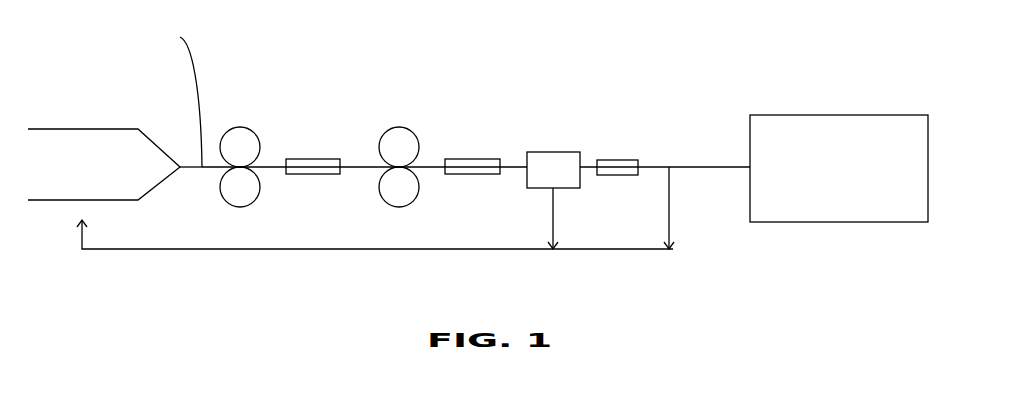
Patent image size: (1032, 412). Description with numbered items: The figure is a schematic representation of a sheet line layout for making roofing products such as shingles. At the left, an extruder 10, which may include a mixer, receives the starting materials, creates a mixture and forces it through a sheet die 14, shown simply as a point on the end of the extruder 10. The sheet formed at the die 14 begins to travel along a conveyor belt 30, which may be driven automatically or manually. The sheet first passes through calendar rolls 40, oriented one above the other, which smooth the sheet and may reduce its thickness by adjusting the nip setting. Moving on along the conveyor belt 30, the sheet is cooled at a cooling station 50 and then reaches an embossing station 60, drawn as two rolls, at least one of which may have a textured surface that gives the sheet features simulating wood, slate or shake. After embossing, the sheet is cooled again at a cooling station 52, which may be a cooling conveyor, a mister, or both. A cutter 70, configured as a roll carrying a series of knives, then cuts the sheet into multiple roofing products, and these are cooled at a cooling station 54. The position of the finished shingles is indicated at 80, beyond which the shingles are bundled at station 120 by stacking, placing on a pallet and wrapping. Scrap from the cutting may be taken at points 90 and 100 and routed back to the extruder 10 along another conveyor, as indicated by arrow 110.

The extruder 10 is at (103, 113).
The sheet die 14 is at (188, 182).
The conveyor belt 30 is at (175, 96).
The calendar rolls 40 is at (240, 115).
The cooling station 50 is at (313, 142).
The cooling station 52 is at (472, 142).
The cooling station 54 is at (619, 152).
The embossing station 60 is at (400, 115).
The cutter 70 is at (553, 147).
The position of finished shingles 80 is at (653, 167).
The scrap take-off point 90 is at (550, 208).
The scrap take-off point 100 is at (667, 208).
The scrap return arrow 110 is at (223, 249).
The bundling station 120 is at (810, 253).